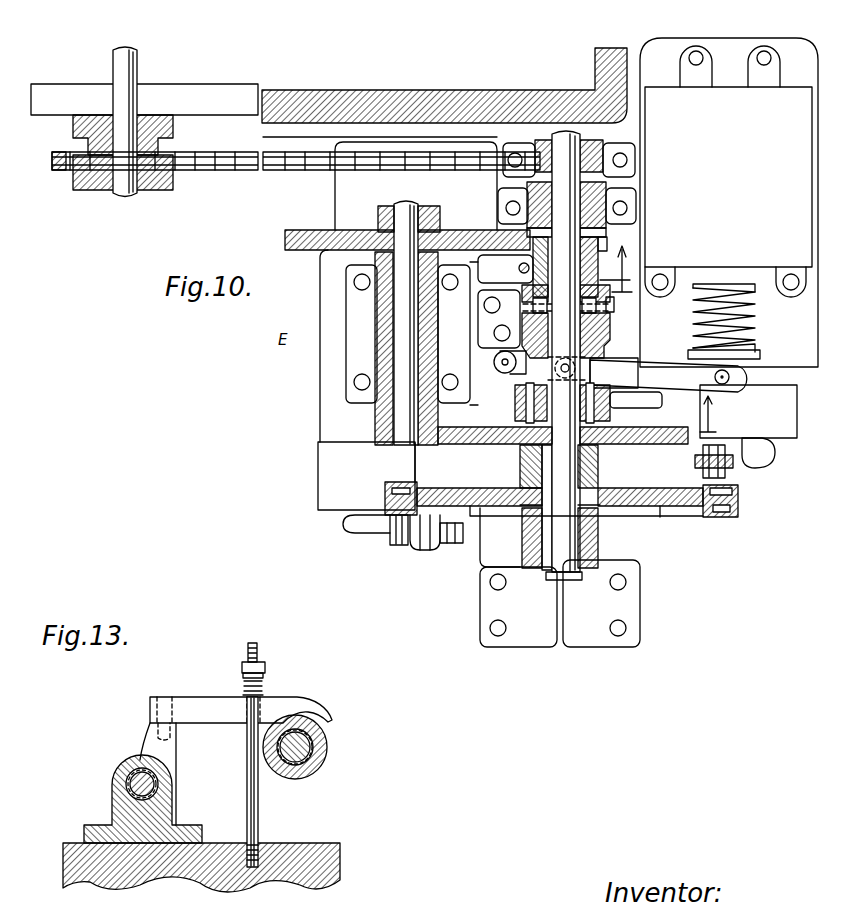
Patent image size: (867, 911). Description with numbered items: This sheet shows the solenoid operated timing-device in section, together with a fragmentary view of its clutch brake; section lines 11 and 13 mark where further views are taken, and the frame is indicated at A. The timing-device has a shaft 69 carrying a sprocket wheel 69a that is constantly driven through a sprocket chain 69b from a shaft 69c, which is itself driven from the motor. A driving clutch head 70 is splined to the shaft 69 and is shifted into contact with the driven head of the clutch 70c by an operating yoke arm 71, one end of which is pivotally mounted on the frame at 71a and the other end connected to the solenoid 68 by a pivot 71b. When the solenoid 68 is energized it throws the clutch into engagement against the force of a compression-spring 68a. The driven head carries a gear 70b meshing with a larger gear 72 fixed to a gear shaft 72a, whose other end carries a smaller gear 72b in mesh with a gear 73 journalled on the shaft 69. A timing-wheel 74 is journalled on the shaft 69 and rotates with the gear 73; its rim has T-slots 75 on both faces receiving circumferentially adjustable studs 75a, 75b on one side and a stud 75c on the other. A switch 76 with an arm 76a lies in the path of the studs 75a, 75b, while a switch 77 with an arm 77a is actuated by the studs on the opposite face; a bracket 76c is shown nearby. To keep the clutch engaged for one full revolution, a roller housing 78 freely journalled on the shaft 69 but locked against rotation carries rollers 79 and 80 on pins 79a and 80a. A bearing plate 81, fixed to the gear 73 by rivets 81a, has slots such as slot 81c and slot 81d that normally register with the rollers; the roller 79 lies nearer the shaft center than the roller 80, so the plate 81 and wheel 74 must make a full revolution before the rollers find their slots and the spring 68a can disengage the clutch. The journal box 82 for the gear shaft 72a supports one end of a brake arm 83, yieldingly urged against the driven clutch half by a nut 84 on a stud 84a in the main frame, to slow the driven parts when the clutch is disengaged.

In FIG. 10, the solenoid 68 is at (652, 95).
In FIG. 10, the compression-spring 68a is at (755, 330).
In FIG. 10, the shaft 69 is at (560, 575).
In FIG. 13, the shaft 69 is at (325, 755).
In FIG. 10, the sprocket wheel 69a is at (545, 130).
In FIG. 10, the sprocket chain 69b is at (235, 153).
In FIG. 10, the shaft 69c is at (133, 68).
In FIG. 10, the driving clutch head 70 is at (603, 335).
In FIG. 10, the gear 70b is at (607, 245).
In FIG. 10, the roller 70c is at (614, 304).
In FIG. 13, the roller 70c is at (325, 740).
In FIG. 10, the operating yoke arm 71 is at (662, 365).
In FIG. 10, the pivot 71a is at (495, 360).
In FIG. 10, the pivot 71b is at (732, 381).
In FIG. 10, the gear 72 is at (335, 240).
In FIG. 10, the gear shaft 72a is at (412, 204).
In FIG. 13, the gear shaft 72a is at (158, 781).
In FIG. 10, the gear 72b is at (393, 443).
In FIG. 10, the gear 73 is at (455, 433).
In FIG. 10, the timing-wheel 74 is at (660, 506).
In FIG. 10, the T-slots 75 is at (402, 484).
In FIG. 10, the stud 75a is at (432, 550).
In FIG. 10, the stud 75b is at (398, 540).
In FIG. 10, the stud 75c is at (700, 461).
In FIG. 10, the switch 76 is at (330, 468).
In FIG. 10, the arm 76a is at (380, 527).
In FIG. 10, the bracket 76c is at (470, 548).
In FIG. 10, the switch 77 is at (785, 432).
In FIG. 10, the arm 77a is at (760, 462).
In FIG. 10, the roller housing 78 is at (614, 373).
In FIG. 10, the roller 79 is at (606, 392).
In FIG. 10, the pin 79a is at (640, 408).
In FIG. 10, the roller 80 is at (520, 392).
In FIG. 10, the pin 80a is at (520, 408).
In FIG. 10, the bearing plate 81 is at (480, 445).
In FIG. 10, the rivets 81a is at (519, 268).
In FIG. 10, the slot 81c is at (516, 466).
In FIG. 10, the hub 81d is at (604, 466).
In FIG. 13, the journal box 82 is at (163, 752).
In FIG. 13, the brake arm 83 is at (200, 703).
In FIG. 13, the nut 84 is at (266, 666).
In FIG. 13, the stud 84a is at (258, 800).
In FIG. 10, the view direction arrow 11 is at (722, 417).
In FIG. 10, the view direction arrow 13 is at (616, 269).
In FIG. 10, the base A is at (320, 383).
In FIG. 13, the base A is at (318, 850).